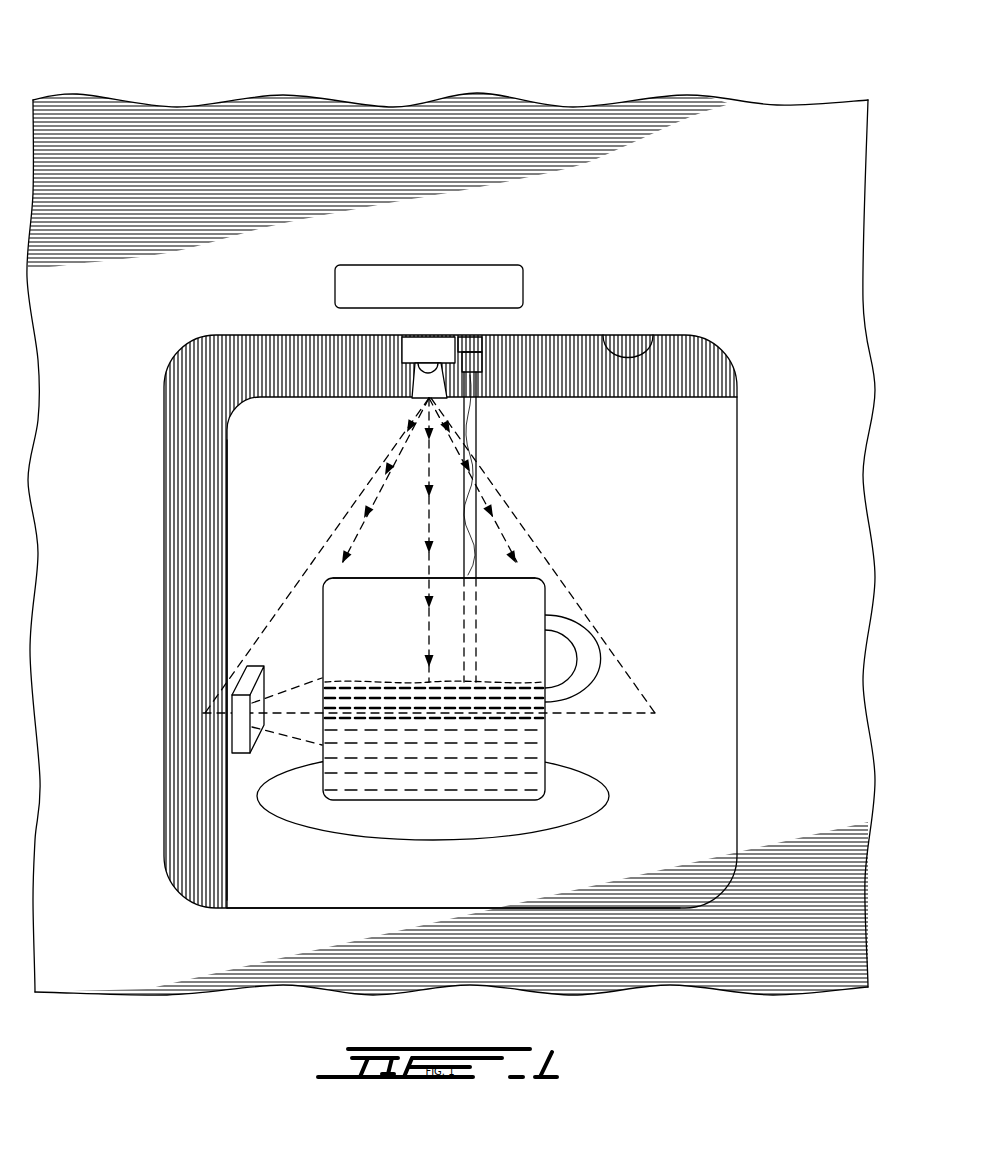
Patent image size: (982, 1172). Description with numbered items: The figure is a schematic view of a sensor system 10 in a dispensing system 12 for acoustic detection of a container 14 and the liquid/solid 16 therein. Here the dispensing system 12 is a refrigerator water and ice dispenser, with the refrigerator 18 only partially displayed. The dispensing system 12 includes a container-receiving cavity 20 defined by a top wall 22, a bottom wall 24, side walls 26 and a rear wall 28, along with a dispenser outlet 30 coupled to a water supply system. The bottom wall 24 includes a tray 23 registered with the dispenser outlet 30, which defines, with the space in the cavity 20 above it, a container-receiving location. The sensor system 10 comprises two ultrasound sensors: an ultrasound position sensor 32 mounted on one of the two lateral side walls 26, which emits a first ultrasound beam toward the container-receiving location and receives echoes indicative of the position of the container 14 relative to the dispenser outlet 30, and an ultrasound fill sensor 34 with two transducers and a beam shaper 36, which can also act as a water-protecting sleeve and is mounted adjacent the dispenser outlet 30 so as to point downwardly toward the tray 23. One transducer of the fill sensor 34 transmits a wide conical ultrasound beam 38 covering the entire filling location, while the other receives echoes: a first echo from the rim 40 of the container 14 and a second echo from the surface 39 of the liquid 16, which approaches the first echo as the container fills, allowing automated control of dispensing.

The sensor system 10 is at (392, 347).
The dispensing system 12 is at (770, 192).
The container 14 is at (560, 737).
The liquid/solid 16 is at (347, 752).
The refrigerator 18 is at (802, 488).
The container-receiving cavity 20 is at (668, 490).
The top wall 22 is at (653, 335).
The tray 23 is at (375, 813).
The bottom wall 24 is at (272, 885).
The side wall 26 is at (187, 708).
The rear wall 28 is at (245, 520).
The dispenser outlet 30 is at (473, 358).
The ultrasound position sensor 32 is at (240, 740).
The ultrasound fill sensor 34 is at (403, 357).
The beam shaper 36 is at (418, 372).
The conical ultrasound beam 38 is at (277, 640).
The surface of the liquid 39 is at (428, 682).
The rim of the container 40 is at (380, 578).